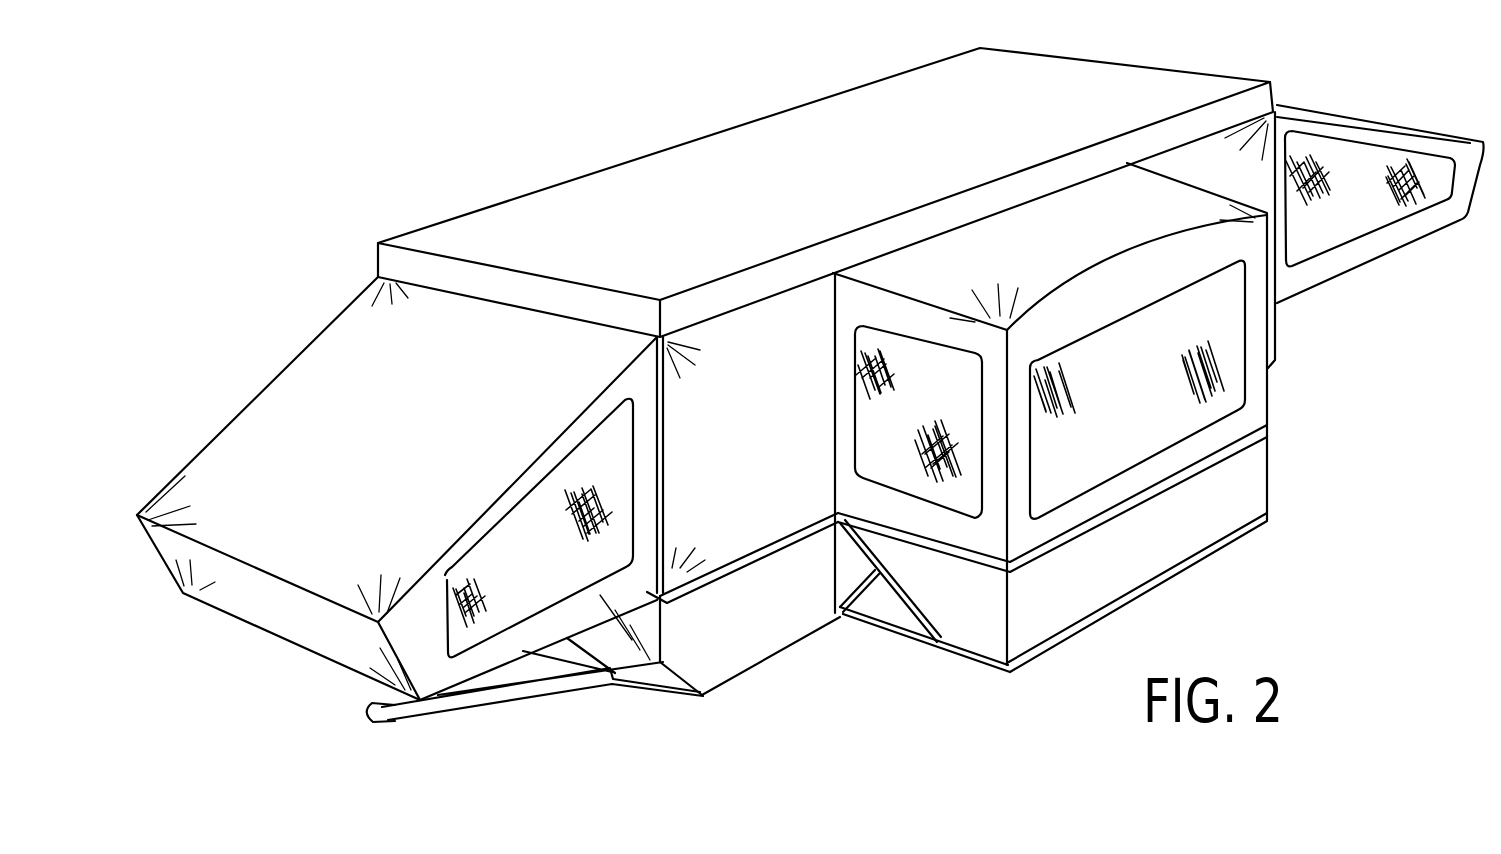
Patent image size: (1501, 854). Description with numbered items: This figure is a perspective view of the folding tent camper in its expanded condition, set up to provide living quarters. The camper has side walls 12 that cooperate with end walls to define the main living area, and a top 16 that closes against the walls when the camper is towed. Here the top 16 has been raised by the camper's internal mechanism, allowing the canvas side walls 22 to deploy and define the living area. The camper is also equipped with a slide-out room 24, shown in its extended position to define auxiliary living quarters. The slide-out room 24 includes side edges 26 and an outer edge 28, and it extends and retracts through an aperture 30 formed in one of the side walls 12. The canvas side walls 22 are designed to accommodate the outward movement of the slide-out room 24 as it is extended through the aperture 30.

The side walls 12 is at (765, 625).
The top 16 is at (924, 145).
The canvas side walls 22 is at (700, 680).
The slide-out room 24 is at (1268, 483).
The side edges 26 is at (1268, 447).
The outer edge 28 is at (1153, 533).
The aperture 30 is at (840, 565).